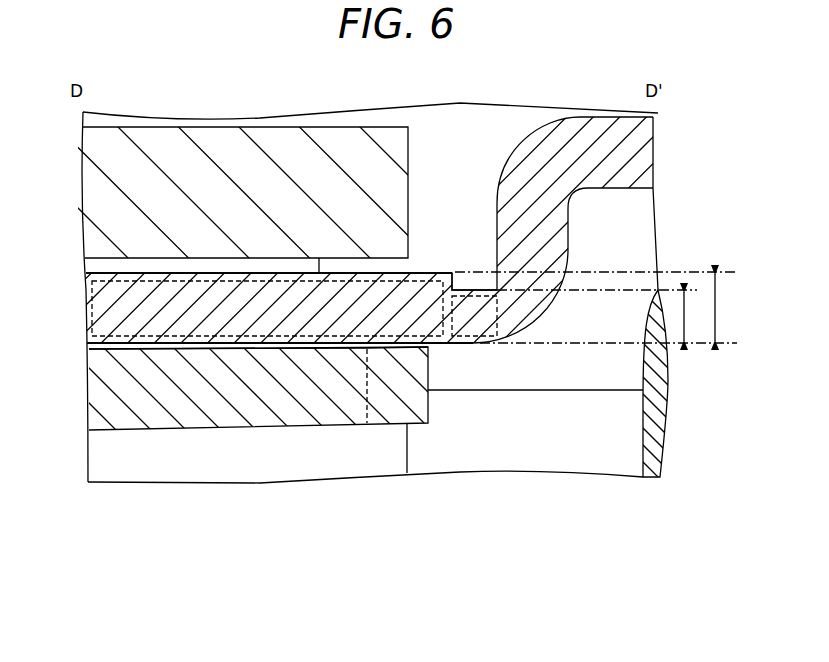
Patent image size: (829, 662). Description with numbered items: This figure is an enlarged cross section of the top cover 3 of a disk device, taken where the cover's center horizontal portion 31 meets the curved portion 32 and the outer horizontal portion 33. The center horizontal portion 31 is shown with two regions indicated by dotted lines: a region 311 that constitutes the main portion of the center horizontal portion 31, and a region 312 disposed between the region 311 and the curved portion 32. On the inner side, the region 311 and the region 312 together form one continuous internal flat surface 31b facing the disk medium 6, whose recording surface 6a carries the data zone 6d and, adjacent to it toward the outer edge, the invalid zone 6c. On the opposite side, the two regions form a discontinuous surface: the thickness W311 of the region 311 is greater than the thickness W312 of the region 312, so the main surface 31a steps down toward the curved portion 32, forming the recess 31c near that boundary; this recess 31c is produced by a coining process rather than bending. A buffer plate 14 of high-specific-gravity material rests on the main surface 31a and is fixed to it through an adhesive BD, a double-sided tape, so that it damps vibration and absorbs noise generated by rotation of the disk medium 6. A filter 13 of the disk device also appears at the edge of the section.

The top cover 3 is at (64, 324).
The disk medium 6 is at (321, 493).
The recording surface 6a is at (270, 463).
The invalid zone 6c is at (382, 336).
The data zone 6d is at (304, 336).
The filter 13 is at (648, 437).
The buffer plate 14 is at (247, 147).
The center horizontal portion 31 is at (104, 300).
The main surface 31a is at (369, 266).
The internal flat surface 31b is at (138, 350).
The recess 31c is at (475, 281).
The region 311 is at (198, 350).
The region 312 is at (497, 328).
The curved portion 32 is at (542, 233).
The outer horizontal portion 33 is at (617, 157).
The adhesive BD is at (97, 264).
The thickness of region 311 W311 is at (717, 307).
The thickness of region 312 W312 is at (685, 322).